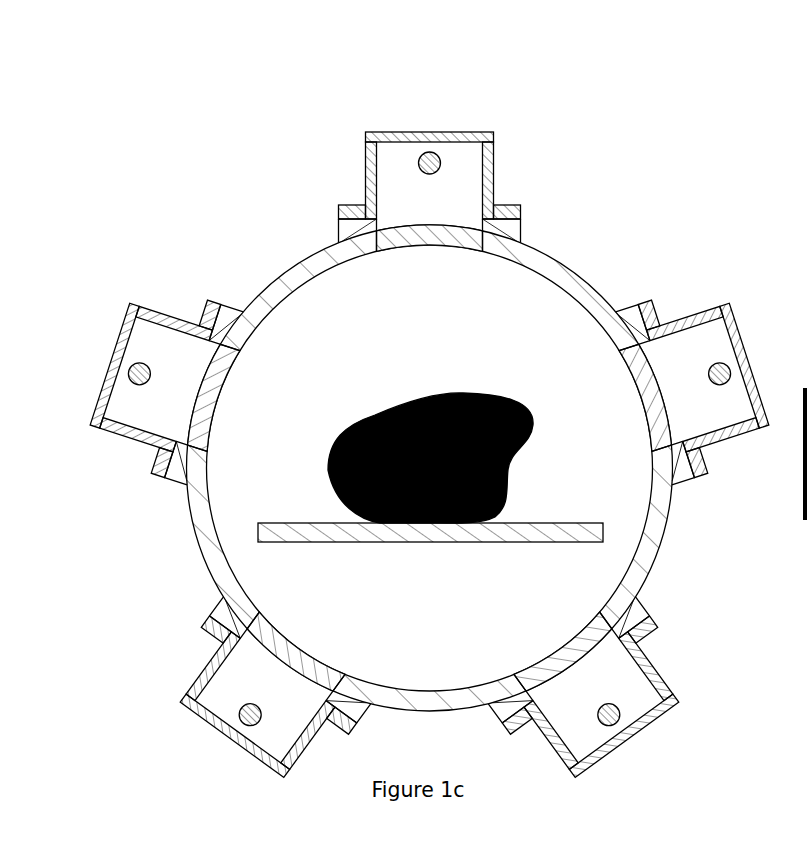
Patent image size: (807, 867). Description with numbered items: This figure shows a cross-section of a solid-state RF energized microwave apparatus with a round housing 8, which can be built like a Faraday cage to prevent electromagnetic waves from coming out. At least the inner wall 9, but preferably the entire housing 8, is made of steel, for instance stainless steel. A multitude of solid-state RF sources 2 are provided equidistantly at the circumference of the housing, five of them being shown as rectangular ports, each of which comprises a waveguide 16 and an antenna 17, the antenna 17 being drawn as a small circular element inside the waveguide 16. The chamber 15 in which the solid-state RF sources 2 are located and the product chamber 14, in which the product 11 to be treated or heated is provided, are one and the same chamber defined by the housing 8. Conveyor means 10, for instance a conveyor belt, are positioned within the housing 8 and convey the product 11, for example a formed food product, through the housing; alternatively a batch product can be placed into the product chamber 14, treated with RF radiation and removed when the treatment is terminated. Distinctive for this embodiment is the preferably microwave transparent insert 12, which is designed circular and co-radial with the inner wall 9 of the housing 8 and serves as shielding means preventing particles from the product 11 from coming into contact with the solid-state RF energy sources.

The solid-state RF source 2 is at (378, 124).
The housing 8 is at (238, 312).
The inner wall 9 is at (327, 265).
The conveyor means 10 is at (302, 537).
The product 11 is at (503, 397).
The microwave transparent insert 12 is at (653, 398).
The product chamber 14 is at (567, 330).
The chamber 15 is at (567, 330).
The waveguide 16 is at (434, 133).
The antenna 17 is at (438, 160).